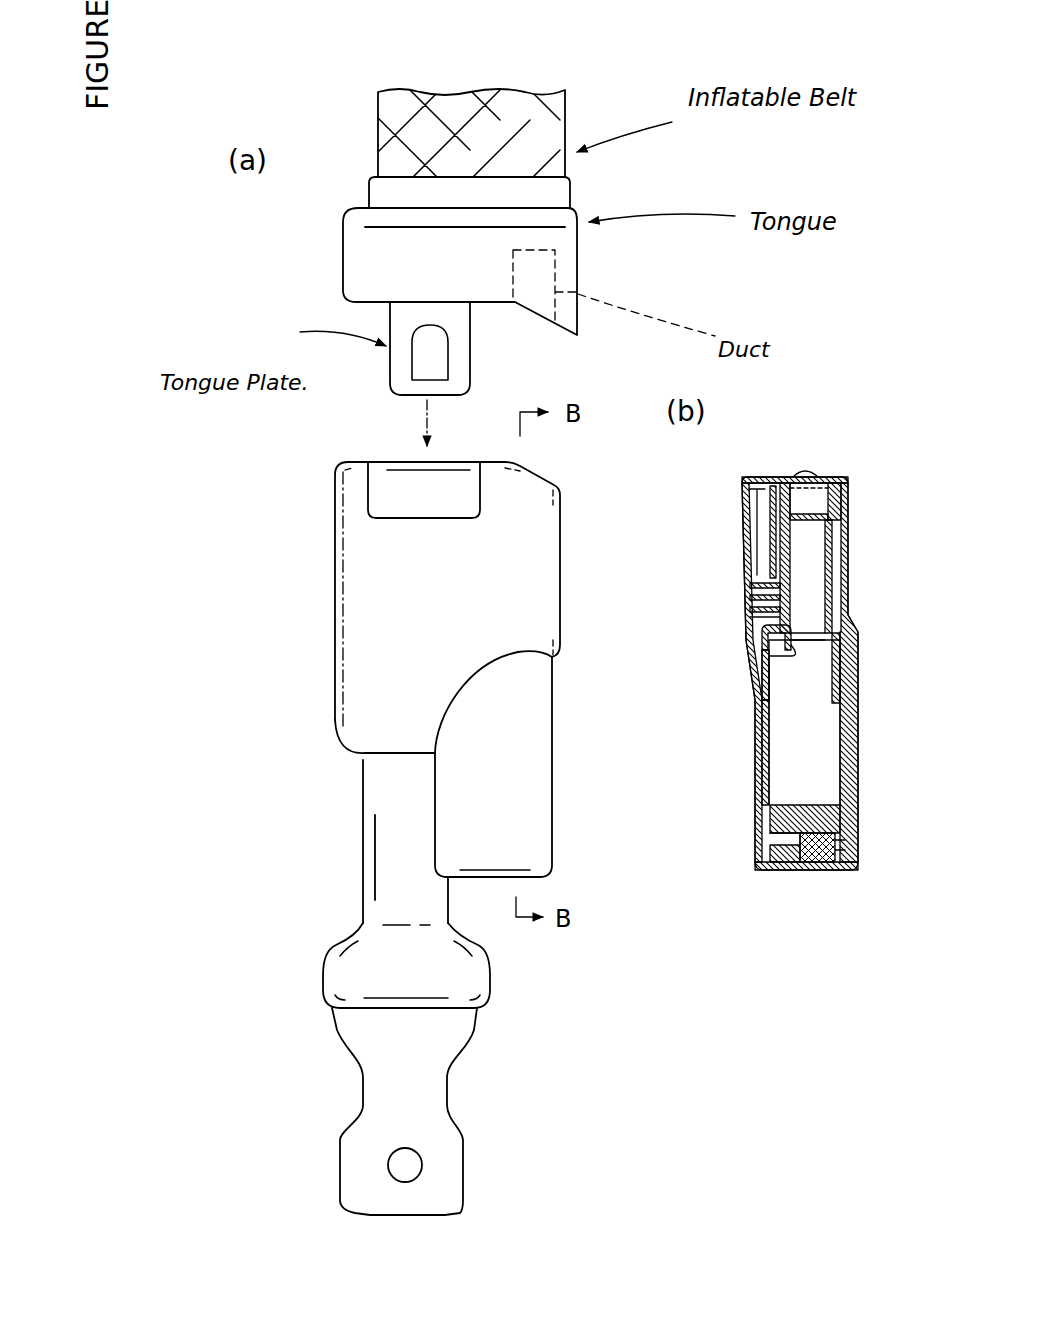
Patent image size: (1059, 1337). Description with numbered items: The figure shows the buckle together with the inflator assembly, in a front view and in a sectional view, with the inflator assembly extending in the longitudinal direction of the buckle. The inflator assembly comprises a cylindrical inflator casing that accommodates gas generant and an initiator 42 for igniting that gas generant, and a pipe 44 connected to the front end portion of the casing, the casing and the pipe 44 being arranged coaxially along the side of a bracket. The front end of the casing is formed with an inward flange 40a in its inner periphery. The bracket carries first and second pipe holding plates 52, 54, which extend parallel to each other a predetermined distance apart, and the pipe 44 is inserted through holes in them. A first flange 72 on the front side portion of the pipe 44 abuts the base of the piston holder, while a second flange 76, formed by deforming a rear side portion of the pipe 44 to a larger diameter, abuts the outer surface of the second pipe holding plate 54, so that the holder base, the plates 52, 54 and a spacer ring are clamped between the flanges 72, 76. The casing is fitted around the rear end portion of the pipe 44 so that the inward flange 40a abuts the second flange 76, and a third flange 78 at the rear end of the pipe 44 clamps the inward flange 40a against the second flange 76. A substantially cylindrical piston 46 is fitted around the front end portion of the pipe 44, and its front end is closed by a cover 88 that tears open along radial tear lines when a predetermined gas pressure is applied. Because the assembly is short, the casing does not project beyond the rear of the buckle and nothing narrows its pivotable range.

The inward flange 40a is at (831, 643).
The initiator 42 is at (820, 798).
The pipe 44 is at (824, 551).
The piston 46 is at (837, 477).
The first pipe holding plate 52 is at (770, 590).
The second pipe holding plate 54 is at (773, 610).
The first flange 72 is at (779, 562).
The second flange 76 is at (761, 628).
The third flange 78 is at (757, 660).
The cover 88 is at (808, 471).